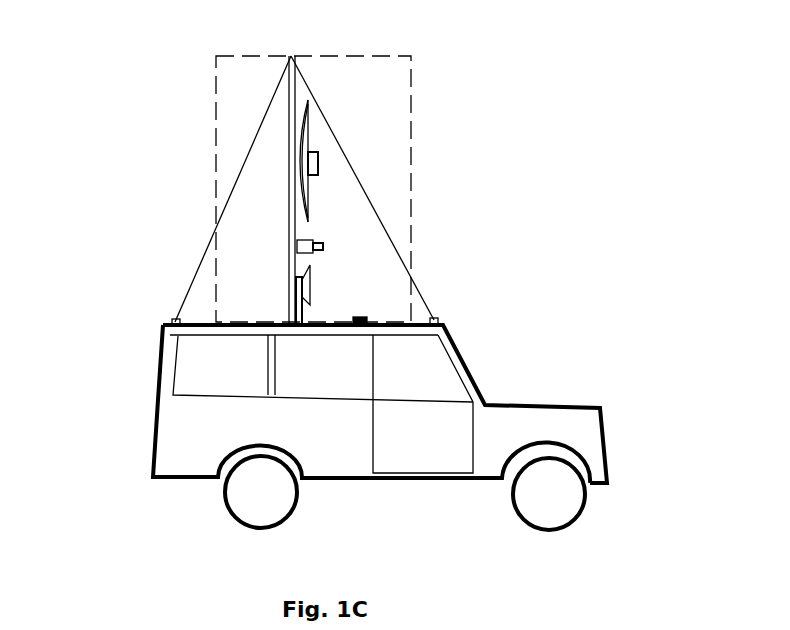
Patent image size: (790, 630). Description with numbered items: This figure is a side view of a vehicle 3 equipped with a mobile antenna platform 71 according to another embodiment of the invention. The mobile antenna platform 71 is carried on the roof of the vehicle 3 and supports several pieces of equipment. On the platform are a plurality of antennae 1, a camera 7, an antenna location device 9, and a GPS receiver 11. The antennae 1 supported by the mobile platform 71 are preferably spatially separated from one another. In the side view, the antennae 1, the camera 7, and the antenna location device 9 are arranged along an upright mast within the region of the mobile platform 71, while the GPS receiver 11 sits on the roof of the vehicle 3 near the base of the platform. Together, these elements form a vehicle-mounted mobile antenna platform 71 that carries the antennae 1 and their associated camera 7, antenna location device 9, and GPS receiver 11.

The antennae 1 is at (293, 160).
The camera 7 is at (297, 241).
The antenna location device 9 is at (297, 287).
The GPS receiver 11 is at (367, 318).
The mobile antenna platform 71 is at (320, 189).
The vehicle 3 is at (562, 425).